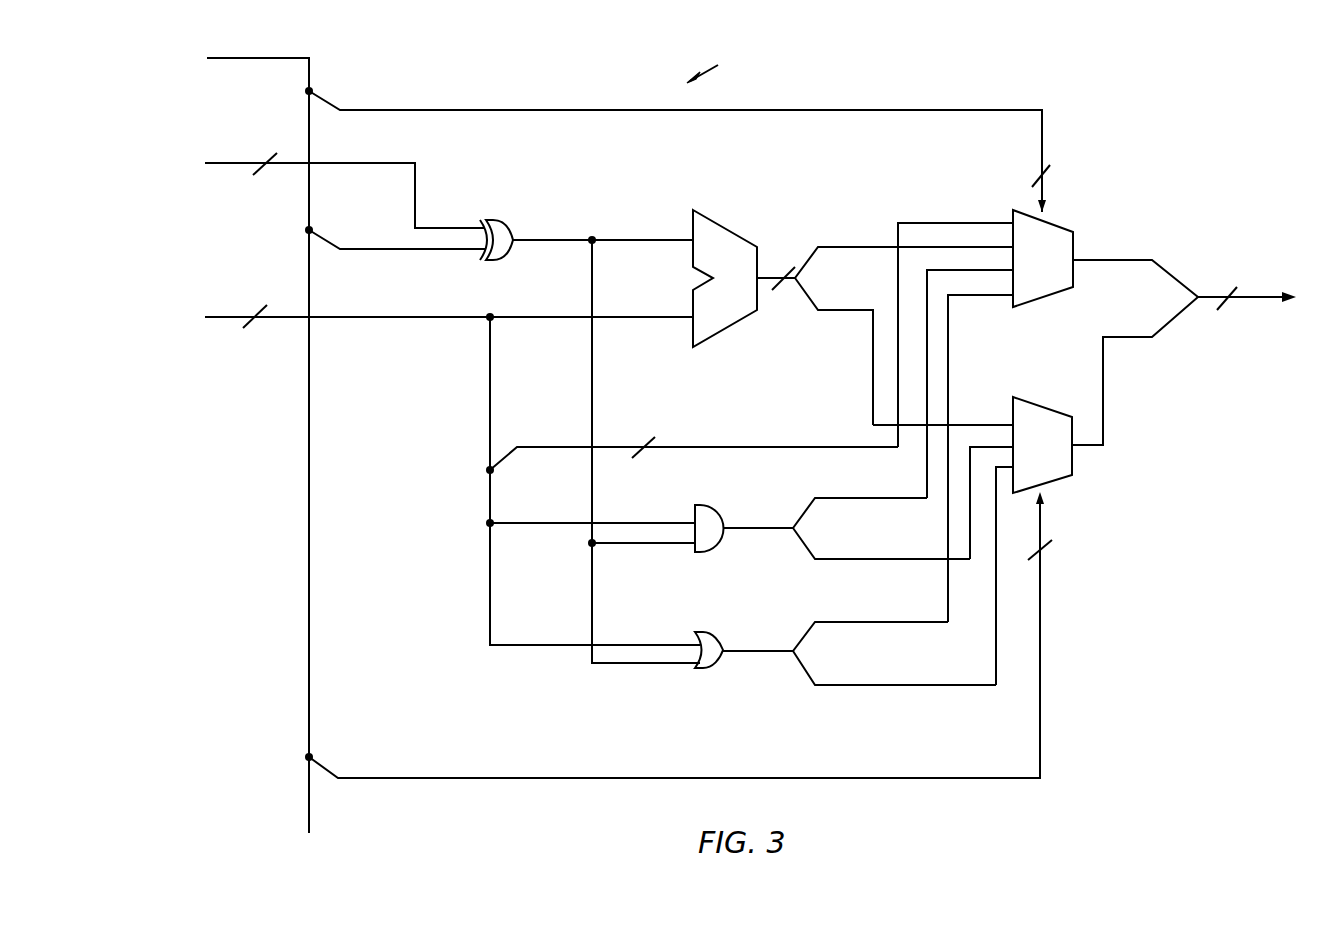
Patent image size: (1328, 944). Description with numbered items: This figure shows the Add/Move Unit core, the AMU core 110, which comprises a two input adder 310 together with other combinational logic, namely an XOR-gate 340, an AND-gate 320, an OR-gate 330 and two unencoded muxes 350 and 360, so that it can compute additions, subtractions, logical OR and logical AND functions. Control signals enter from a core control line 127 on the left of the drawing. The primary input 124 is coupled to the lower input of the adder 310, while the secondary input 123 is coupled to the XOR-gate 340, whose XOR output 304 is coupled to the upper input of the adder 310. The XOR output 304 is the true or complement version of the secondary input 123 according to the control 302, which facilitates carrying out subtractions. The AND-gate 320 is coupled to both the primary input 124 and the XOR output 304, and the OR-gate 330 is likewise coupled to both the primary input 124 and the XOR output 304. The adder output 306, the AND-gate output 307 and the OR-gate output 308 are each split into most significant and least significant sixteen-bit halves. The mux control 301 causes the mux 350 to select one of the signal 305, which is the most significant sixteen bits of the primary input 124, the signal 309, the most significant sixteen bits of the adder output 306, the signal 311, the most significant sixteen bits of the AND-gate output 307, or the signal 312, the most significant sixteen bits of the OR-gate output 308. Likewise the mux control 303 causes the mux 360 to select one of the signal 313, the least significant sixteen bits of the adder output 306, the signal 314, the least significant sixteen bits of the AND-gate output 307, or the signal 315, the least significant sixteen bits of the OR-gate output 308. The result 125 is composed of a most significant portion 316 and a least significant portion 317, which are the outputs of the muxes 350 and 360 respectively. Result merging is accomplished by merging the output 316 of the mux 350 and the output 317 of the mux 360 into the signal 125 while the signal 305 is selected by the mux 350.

The AMU core 110 is at (725, 70).
The secondary input 123 is at (331, 182).
The primary input 124 is at (430, 325).
The result 125 is at (1256, 280).
The core control line 127 is at (239, 433).
The mux control 301 is at (687, 142).
The control 302 is at (397, 230).
The mux control 303 is at (685, 635).
The XOR output 304 is at (606, 431).
The signal 305 is at (692, 481).
The adder output 306 is at (885, 323).
The AND-gate output 307 is at (846, 532).
The OR-gate output 308 is at (859, 659).
The signal 309 is at (955, 314).
The two input adder 310 is at (735, 265).
The signal 311 is at (990, 384).
The signal 312 is at (989, 458).
The signal 313 is at (943, 403).
The signal 314 is at (950, 522).
The signal 315 is at (965, 598).
The most significant portion 316 is at (1135, 266).
The least significant portion 317 is at (1135, 395).
The AND-gate 320 is at (727, 532).
The OR-gate 330 is at (728, 654).
The XOR-gate 340 is at (511, 238).
The mux 350 is at (1069, 248).
The mux 360 is at (1054, 434).